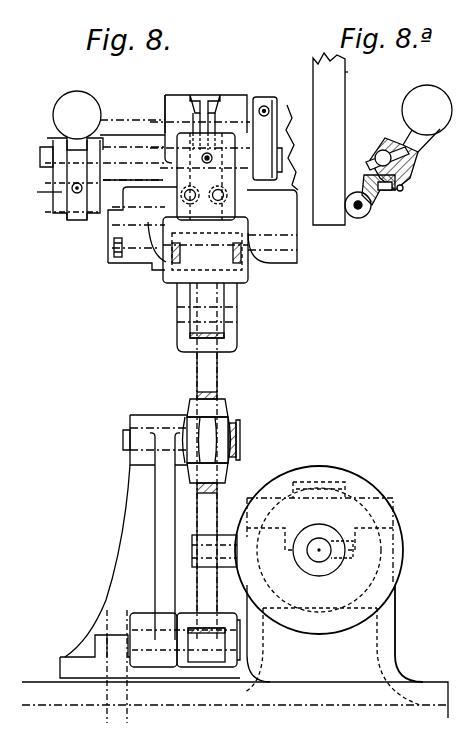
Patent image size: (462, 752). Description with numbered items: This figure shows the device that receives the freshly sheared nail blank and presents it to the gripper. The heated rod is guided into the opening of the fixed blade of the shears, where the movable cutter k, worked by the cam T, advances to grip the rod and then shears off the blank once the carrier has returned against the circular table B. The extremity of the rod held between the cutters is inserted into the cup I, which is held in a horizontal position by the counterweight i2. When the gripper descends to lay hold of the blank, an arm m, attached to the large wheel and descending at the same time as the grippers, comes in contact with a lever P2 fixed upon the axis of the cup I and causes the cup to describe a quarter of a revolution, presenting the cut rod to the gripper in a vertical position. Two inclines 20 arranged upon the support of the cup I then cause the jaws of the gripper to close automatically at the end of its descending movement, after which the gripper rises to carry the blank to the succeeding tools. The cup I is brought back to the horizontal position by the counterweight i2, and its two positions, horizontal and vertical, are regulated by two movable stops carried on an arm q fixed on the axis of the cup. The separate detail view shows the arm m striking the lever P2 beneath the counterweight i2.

In FIG. 8, the counterweight i2 is at (109, 115).
In FIG. 8A, the counterweight i2 is at (411, 137).
In FIG. 8, the circular table B is at (129, 125).
In FIG. 8, the cup I is at (187, 132).
In FIG. 8, the inclines 20 is at (193, 108).
In FIG. 8, the arm q is at (275, 143).
In FIG. 8, the movable cutter k is at (205, 176).
In FIG. 8, the lever P2 is at (63, 192).
In FIG. 8A, the lever P2 is at (378, 200).
In FIG. 8, the cam T is at (333, 477).
In FIG. 8A, the arm m is at (330, 139).